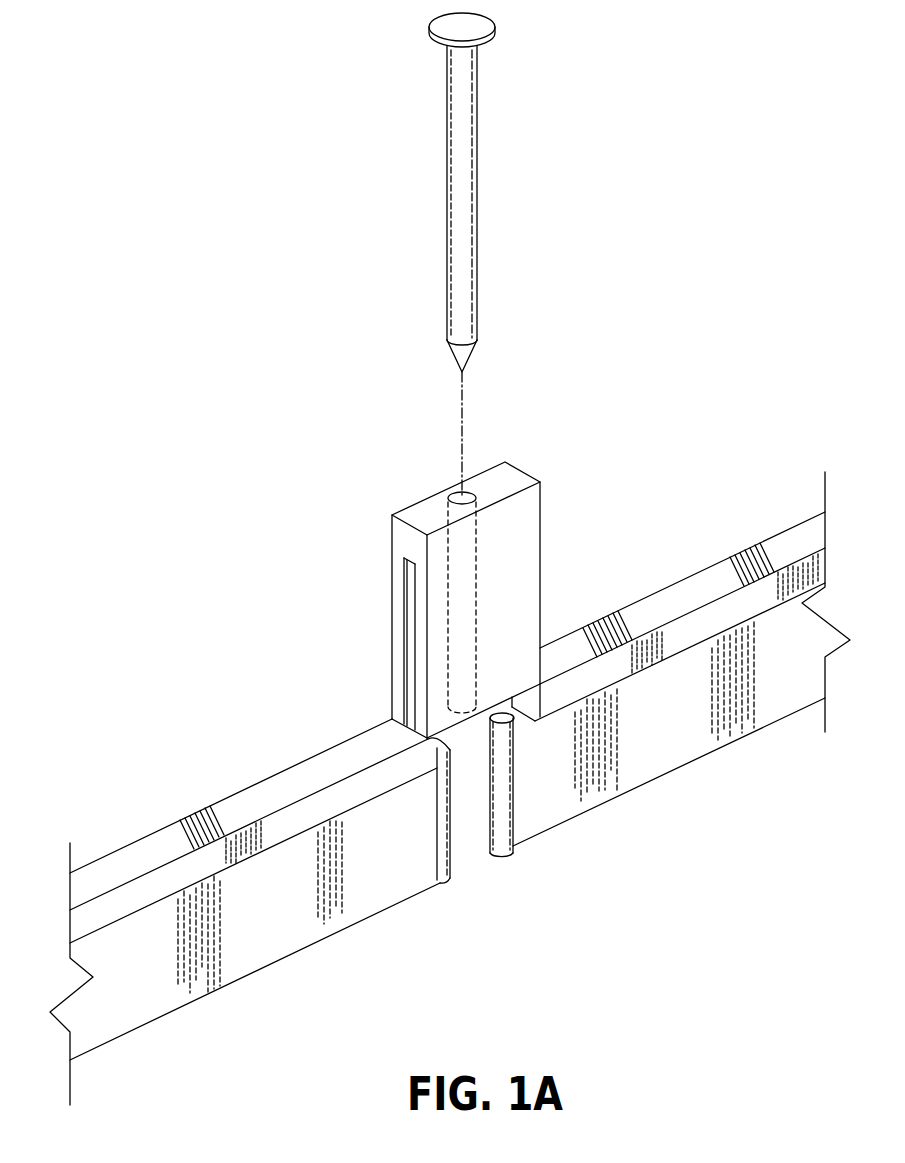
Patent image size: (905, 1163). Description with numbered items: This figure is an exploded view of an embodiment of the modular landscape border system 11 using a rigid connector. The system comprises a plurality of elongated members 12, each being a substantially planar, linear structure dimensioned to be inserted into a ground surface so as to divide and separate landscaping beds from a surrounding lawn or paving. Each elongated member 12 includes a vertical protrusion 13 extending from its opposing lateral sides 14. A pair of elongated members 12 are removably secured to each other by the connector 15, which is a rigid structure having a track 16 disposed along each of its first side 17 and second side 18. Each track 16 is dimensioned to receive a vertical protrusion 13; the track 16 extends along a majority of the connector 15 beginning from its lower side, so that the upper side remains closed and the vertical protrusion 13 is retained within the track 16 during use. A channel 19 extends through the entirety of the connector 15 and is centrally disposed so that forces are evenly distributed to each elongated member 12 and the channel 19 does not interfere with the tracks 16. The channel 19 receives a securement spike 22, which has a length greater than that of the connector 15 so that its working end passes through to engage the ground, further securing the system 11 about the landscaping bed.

The modular landscape border system 11 is at (335, 265).
The elongated member 12 is at (668, 758).
The vertical protrusion 13 is at (503, 832).
The lateral side 14 is at (403, 870).
The connector 15 is at (523, 548).
The track 16 is at (410, 640).
The first side 17 is at (400, 583).
The second side 18 is at (542, 587).
The channel 19 is at (447, 563).
The securement spike 22 is at (475, 145).